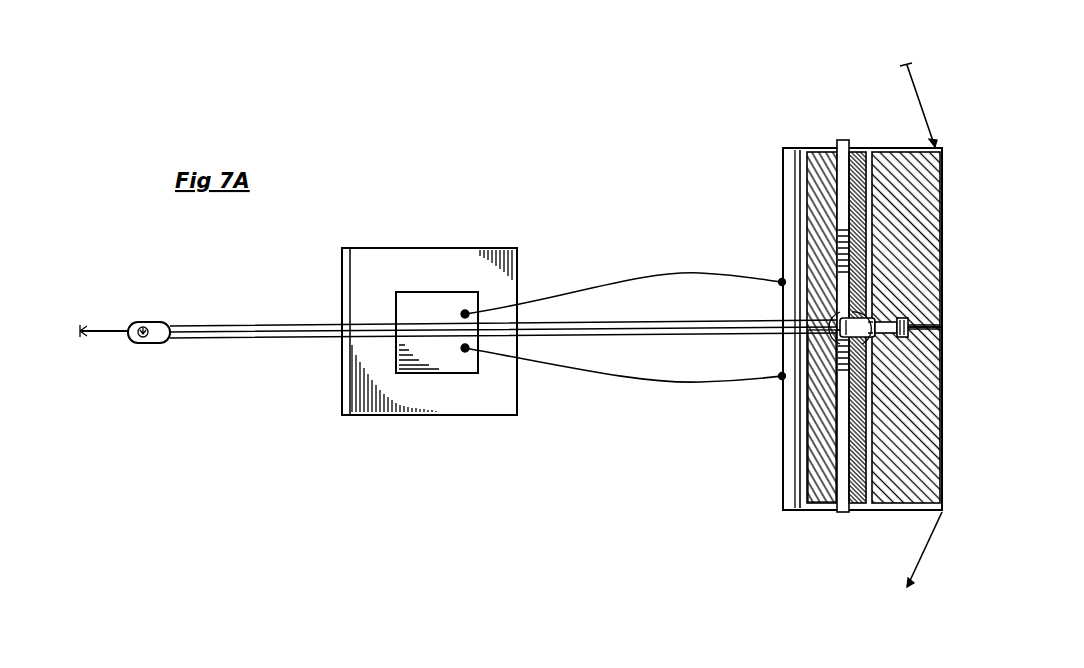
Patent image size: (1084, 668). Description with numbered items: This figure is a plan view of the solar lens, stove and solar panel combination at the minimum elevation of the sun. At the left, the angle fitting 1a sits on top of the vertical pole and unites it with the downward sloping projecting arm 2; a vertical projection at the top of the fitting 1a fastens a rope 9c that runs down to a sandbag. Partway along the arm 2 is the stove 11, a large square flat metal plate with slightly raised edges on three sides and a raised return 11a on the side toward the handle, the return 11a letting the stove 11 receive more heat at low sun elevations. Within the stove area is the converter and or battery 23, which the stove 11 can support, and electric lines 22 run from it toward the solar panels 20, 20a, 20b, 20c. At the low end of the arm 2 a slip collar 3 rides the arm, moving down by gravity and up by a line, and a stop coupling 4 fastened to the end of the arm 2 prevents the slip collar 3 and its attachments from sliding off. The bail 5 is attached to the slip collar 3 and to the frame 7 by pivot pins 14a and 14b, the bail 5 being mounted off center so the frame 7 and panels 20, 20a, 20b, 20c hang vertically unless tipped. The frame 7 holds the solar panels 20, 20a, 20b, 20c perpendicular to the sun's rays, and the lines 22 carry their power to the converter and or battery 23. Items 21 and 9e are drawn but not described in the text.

The rope 9c is at (112, 328).
The angle fitting 1a is at (154, 320).
The sloping projecting arm 2 is at (212, 323).
The stove 11 is at (461, 247).
The raised return 11a is at (342, 286).
The converter and or battery 23 is at (452, 364).
The electric lines 22 is at (650, 277).
The frame 7 is at (784, 213).
The solar panel 20 is at (822, 153).
The solar panel 20a is at (903, 157).
The solar panel 20b is at (895, 490).
The solar panel 20c is at (827, 458).
The pivot pin 14a is at (846, 512).
The pivot pin 14b is at (842, 140).
The bail 5 is at (842, 183).
The stop coupling 4 is at (885, 290).
The slip collar 3 is at (840, 313).
The nut 21 is at (834, 347).
The axis direction 9e is at (904, 84).